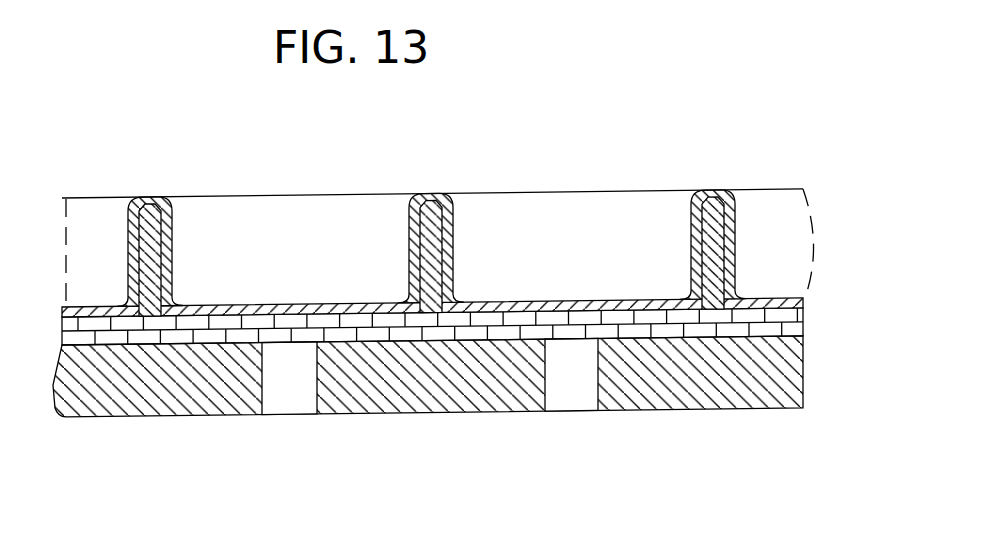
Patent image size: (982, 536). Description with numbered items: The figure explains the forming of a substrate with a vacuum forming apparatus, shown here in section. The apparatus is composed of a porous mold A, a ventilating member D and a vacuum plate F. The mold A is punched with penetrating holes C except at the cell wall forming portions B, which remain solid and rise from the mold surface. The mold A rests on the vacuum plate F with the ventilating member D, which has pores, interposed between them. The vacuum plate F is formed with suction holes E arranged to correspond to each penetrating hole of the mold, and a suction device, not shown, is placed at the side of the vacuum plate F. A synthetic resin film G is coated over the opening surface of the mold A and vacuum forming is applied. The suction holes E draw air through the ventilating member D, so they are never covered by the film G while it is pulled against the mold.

The porous mold A is at (476, 145).
The cell wall forming portions B is at (713, 296).
The penetrating holes C is at (528, 222).
The ventilating member D is at (787, 325).
The suction holes E is at (578, 390).
The vacuum plate F is at (783, 373).
The synthetic resin film G is at (722, 195).